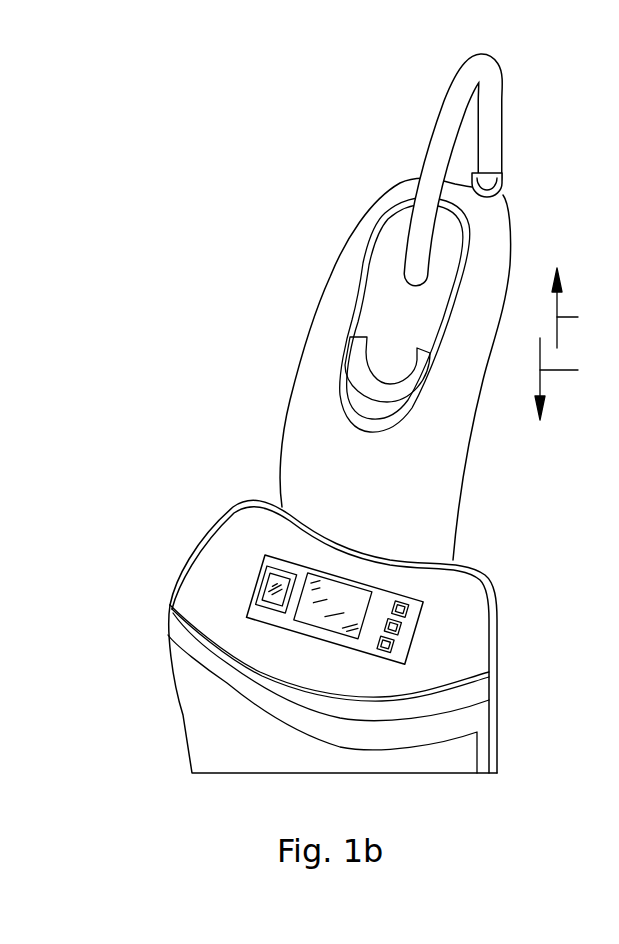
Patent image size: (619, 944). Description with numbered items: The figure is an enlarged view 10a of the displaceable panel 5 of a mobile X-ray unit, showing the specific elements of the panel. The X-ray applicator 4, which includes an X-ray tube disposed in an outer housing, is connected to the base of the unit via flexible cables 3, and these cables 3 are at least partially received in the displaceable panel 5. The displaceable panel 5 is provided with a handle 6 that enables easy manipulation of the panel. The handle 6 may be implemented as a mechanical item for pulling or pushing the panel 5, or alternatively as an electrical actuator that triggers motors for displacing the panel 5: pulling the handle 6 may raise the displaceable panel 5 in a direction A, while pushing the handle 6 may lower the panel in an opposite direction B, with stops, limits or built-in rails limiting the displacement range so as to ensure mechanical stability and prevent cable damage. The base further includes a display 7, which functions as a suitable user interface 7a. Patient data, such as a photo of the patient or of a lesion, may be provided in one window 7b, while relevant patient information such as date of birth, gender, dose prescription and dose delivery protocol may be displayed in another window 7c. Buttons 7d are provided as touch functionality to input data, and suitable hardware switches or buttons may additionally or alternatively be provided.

The enlarged view 10a is at (365, 407).
The flexible cables 3 is at (504, 107).
The X-ray applicator 4 is at (504, 211).
The displaceable panel 5 is at (294, 456).
The handle 6 is at (347, 356).
The display 7 is at (252, 536).
The user interface 7a is at (424, 594).
The window 7b is at (270, 590).
The window 7c is at (355, 595).
The buttons 7d is at (396, 644).